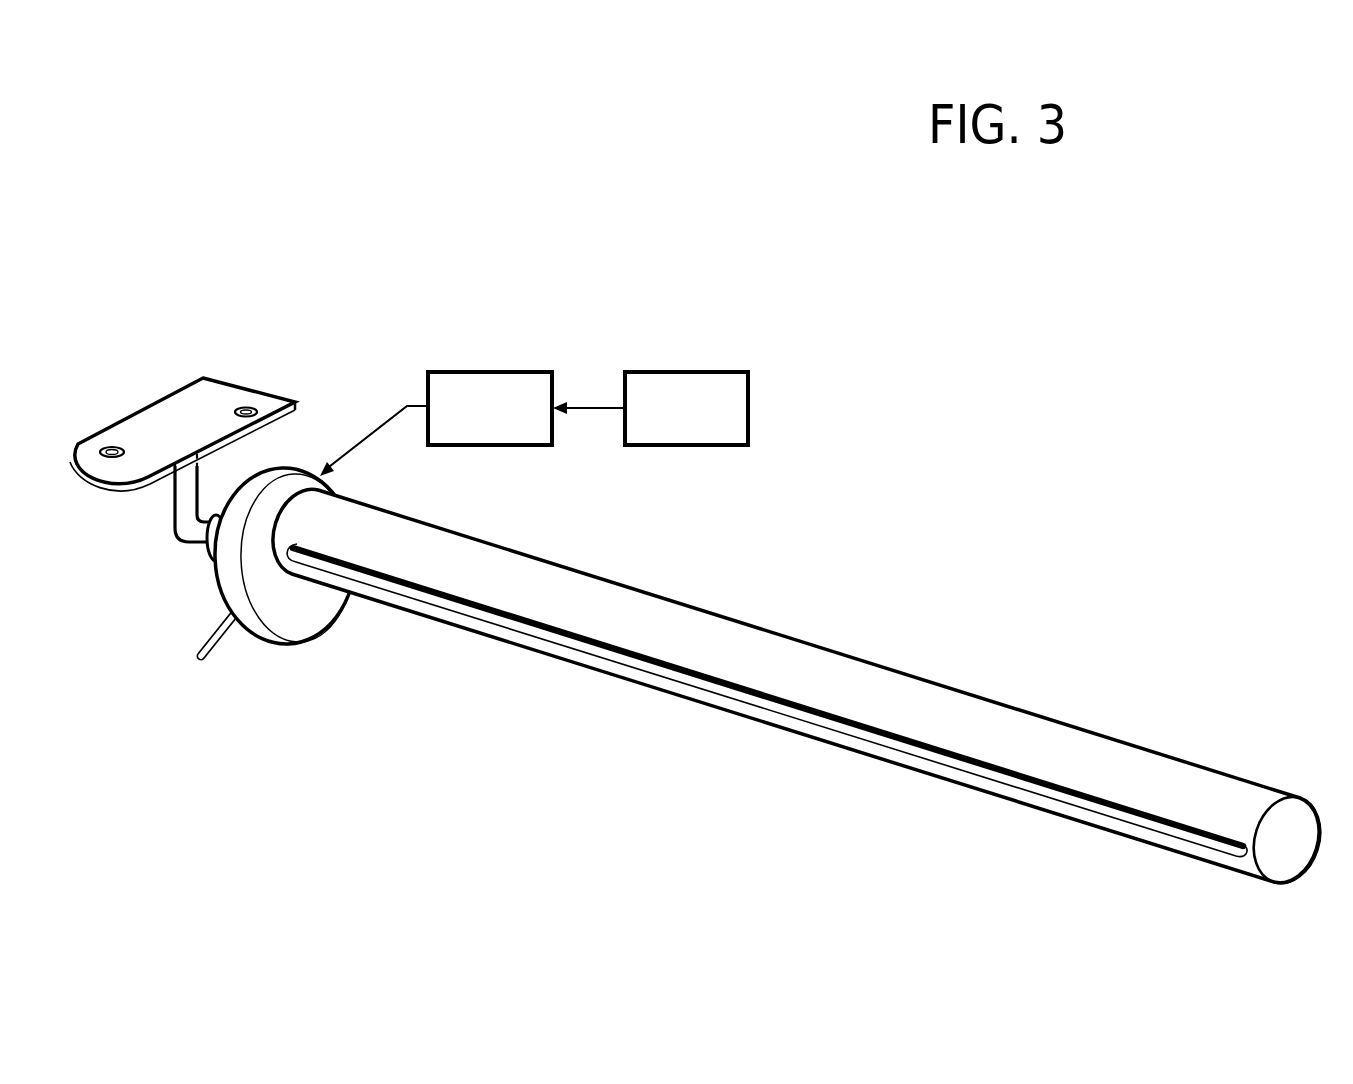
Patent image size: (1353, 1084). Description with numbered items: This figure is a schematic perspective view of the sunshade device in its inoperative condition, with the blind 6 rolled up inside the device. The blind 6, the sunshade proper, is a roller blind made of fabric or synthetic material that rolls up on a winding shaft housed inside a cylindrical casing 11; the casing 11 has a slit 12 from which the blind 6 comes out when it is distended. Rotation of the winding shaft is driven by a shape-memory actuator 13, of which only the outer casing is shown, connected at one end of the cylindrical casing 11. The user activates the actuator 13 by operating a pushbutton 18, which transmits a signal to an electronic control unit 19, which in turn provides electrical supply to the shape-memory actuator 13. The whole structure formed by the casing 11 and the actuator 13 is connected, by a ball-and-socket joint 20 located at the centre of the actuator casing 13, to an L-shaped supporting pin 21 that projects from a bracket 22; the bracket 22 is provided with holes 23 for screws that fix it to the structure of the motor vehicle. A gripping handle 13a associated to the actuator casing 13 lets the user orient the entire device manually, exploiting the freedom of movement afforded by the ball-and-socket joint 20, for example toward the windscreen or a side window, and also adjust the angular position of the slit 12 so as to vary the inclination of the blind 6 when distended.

The blind 6 is at (533, 630).
The cylindrical casing 11 is at (839, 645).
The slit 12 is at (743, 692).
The shape-memory actuator 13 is at (308, 623).
The gripping handle 13a is at (213, 650).
The pushbutton 18 is at (705, 390).
The electronic control unit 19 is at (486, 397).
The ball-and-socket joint 20 is at (212, 550).
The L-shaped supporting pin 21 is at (187, 512).
The bracket 22 is at (212, 387).
The holes 23 is at (113, 447).